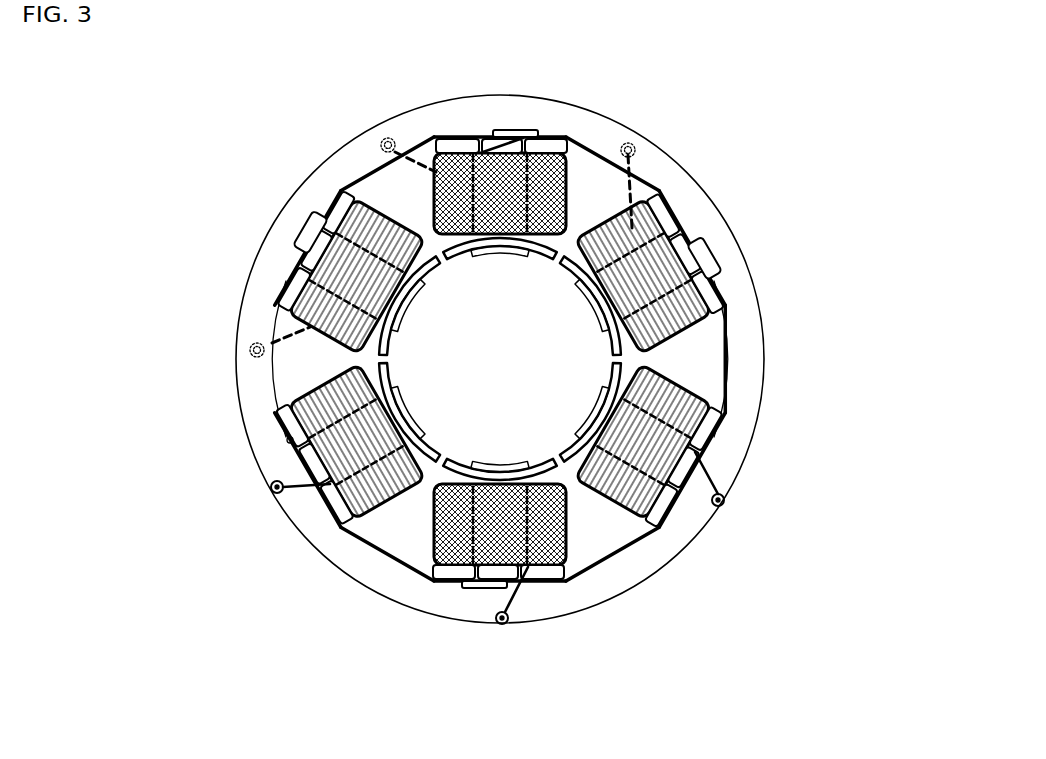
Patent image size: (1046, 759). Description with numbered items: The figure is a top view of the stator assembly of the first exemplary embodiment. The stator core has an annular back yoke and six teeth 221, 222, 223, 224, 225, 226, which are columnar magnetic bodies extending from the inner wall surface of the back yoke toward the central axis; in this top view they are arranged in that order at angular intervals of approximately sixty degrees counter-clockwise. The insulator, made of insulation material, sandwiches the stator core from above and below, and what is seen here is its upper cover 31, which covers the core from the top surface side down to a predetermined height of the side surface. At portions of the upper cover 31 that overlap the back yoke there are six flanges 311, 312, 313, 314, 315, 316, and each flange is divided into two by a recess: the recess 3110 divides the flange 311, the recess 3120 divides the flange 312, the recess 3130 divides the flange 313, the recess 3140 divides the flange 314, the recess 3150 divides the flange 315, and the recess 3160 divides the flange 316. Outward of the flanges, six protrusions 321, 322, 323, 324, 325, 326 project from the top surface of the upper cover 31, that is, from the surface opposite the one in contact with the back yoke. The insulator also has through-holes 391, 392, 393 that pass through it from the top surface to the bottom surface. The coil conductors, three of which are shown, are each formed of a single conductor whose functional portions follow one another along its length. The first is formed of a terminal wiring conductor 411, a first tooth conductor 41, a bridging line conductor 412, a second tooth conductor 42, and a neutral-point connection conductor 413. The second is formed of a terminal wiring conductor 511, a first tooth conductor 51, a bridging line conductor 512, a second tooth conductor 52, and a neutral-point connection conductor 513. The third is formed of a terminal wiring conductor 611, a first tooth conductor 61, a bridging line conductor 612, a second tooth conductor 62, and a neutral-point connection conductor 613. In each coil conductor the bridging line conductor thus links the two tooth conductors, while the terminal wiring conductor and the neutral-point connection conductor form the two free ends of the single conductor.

The upper cover 31 is at (762, 331).
The flange 311 is at (290, 413).
The flange 312 is at (422, 593).
The flange 313 is at (726, 430).
The flange 314 is at (660, 198).
The flange 315 is at (452, 148).
The flange 316 is at (340, 210).
The protrusion 321 is at (305, 455).
The protrusion 322 is at (480, 600).
The protrusion 323 is at (690, 520).
The protrusion 324 is at (708, 268).
The protrusion 325 is at (527, 140).
The protrusion 326 is at (310, 226).
The recess 3110 is at (270, 493).
The recess 3120 is at (506, 629).
The recess 3130 is at (731, 513).
The recess 3140 is at (700, 240).
The recess 3150 is at (489, 132).
The recess 3160 is at (305, 262).
The first tooth conductor 41 is at (336, 530).
The second tooth conductor 42 is at (652, 178).
The terminal wiring conductor 411 is at (300, 505).
The bridging line conductor 412 is at (708, 258).
The neutral-point connection conductor 413 is at (628, 144).
The first tooth conductor 51 is at (522, 592).
The second tooth conductor 52 is at (457, 147).
The terminal wiring conductor 511 is at (512, 636).
The bridging line conductor 512 is at (513, 143).
The neutral-point connection conductor 513 is at (385, 141).
The first tooth conductor 61 is at (712, 478).
The second tooth conductor 62 is at (298, 330).
The terminal wiring conductor 611 is at (729, 512).
The bridging line conductor 612 is at (352, 202).
The neutral-point connection conductor 613 is at (252, 346).
The through-hole 391 is at (268, 493).
The through-hole 392 is at (504, 627).
The through-hole 393 is at (725, 506).
The tooth 221 is at (288, 440).
The tooth 222 is at (465, 586).
The tooth 223 is at (680, 526).
The tooth 224 is at (673, 216).
The tooth 225 is at (473, 137).
The tooth 226 is at (300, 290).